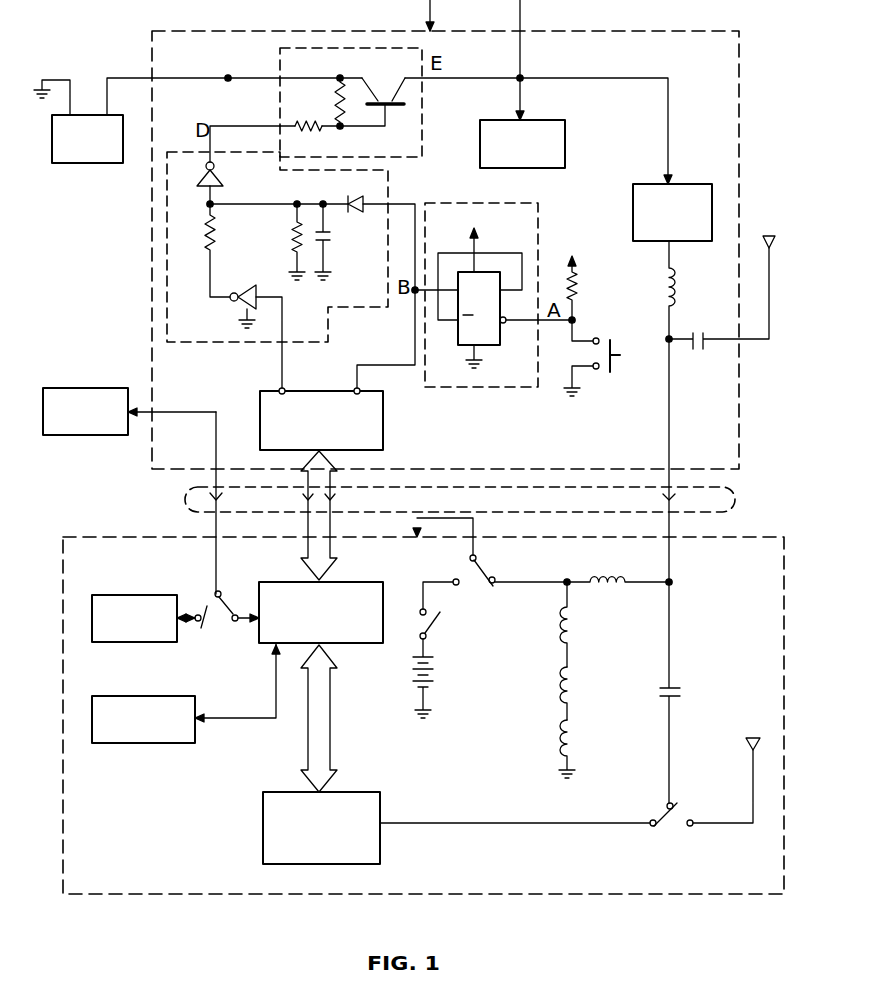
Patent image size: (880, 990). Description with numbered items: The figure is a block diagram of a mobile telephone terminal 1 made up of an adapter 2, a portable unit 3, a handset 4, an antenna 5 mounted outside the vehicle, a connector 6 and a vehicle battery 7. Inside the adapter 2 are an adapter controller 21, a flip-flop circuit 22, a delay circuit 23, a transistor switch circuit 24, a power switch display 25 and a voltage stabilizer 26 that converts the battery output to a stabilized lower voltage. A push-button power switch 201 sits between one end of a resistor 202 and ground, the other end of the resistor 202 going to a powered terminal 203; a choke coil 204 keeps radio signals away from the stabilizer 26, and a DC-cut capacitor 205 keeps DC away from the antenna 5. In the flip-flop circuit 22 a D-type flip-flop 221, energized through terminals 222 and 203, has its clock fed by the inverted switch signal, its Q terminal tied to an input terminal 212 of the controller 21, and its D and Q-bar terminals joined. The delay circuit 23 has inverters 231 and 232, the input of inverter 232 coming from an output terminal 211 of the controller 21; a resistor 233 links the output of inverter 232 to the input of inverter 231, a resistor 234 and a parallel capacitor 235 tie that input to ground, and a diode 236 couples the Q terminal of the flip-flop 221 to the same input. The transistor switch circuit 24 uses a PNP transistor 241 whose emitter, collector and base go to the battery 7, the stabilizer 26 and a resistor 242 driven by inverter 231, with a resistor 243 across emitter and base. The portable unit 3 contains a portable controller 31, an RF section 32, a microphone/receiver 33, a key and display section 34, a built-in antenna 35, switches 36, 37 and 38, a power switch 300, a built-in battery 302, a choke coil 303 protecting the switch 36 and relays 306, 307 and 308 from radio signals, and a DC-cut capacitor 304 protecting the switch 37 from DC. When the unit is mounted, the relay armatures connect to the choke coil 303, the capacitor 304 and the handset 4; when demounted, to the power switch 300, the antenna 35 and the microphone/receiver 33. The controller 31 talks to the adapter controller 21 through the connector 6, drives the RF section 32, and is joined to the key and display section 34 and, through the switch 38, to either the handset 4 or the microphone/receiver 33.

The mobile telephone terminal 1 is at (158, 912).
The adapter 2 is at (630, 28).
The portable unit 3 is at (581, 894).
The handset 4 is at (89, 388).
The antenna 5 is at (770, 234).
The connector 6 is at (712, 498).
The vehicle battery 7 is at (52, 138).
The adapter controller 21 is at (384, 426).
The flip-flop circuit 22 is at (477, 388).
The delay circuit 23 is at (227, 347).
The transistor switch circuit 24 is at (474, 116).
The power switch display 25 is at (566, 140).
The voltage stabilizer 26 is at (679, 184).
The portable controller 31 is at (344, 644).
The radio frequency section 32 is at (346, 792).
The microphone/receiver 33 is at (137, 645).
The key and display section 34 is at (128, 696).
The antenna 35 is at (748, 738).
The switch 36 is at (490, 568).
The switch 37 is at (661, 808).
The switch 38 is at (218, 630).
The power switch 201 is at (598, 339).
The resistor 202 is at (578, 296).
The terminal 203 is at (230, 88).
The choke coil 204 is at (679, 296).
The DC-cut capacitor 205 is at (698, 330).
The output terminal 211 is at (280, 388).
The input terminal 212 is at (355, 388).
The D-type flip-flop 221 is at (460, 340).
The terminal 222 is at (474, 222).
The inverter 231 is at (215, 167).
The inverter 232 is at (253, 282).
The resistor 233 is at (214, 241).
The resistor 234 is at (292, 236).
The capacitor 235 is at (331, 236).
The diode 236 is at (361, 199).
The PNP transistor 241 is at (383, 93).
The resistor 242 is at (309, 130).
The resistor 243 is at (334, 104).
The power switch 300 is at (434, 628).
The built-in battery 302 is at (434, 684).
The choke coil 303 is at (596, 575).
The DC-cut capacitor 304 is at (683, 697).
The relay 306 is at (558, 632).
The relay 307 is at (558, 690).
The relay 308 is at (558, 745).